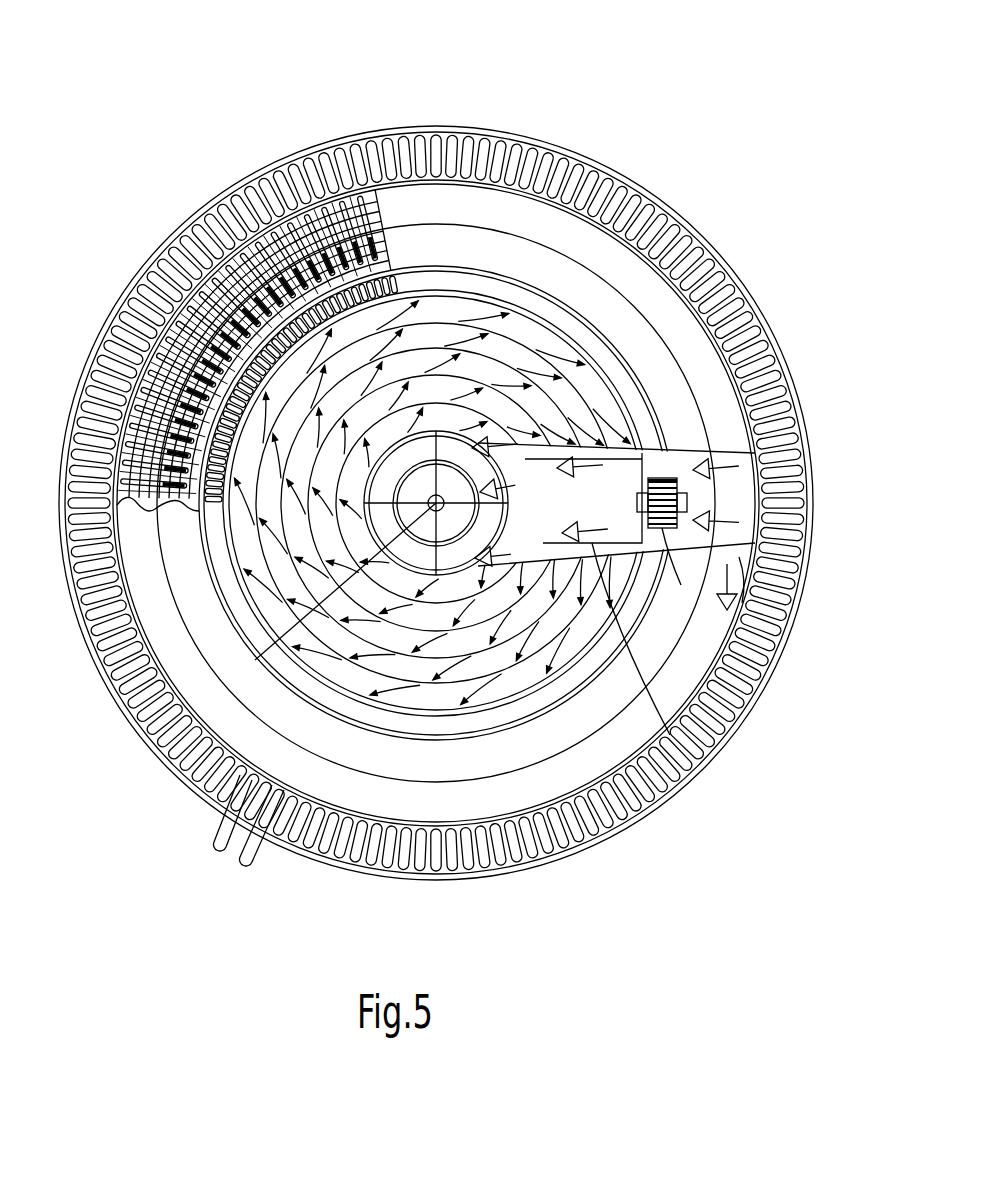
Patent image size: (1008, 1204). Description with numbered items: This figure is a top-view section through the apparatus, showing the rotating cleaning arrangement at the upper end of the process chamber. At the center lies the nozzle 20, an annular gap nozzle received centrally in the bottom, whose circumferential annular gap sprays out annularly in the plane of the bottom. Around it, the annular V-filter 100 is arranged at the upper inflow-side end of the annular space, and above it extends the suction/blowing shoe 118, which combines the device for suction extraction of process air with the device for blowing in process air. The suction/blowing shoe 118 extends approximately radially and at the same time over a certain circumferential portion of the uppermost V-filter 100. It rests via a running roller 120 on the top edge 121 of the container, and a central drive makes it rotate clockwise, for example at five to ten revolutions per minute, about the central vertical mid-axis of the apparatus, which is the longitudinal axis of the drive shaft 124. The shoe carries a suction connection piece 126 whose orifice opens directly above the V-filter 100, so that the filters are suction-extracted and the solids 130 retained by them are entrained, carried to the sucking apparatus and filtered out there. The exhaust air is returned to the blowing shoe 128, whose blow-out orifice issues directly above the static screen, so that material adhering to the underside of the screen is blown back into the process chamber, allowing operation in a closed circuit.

The nozzle 20 is at (438, 318).
The V-filter 100 is at (703, 375).
The suction/blowing shoe 118 is at (593, 443).
The running roller 120 is at (750, 585).
The top edge 121 is at (540, 702).
The drive shaft 124 is at (140, 727).
The suction connection piece 126 is at (688, 445).
The blowing shoe 128 is at (702, 772).
The solids 130 is at (772, 660).